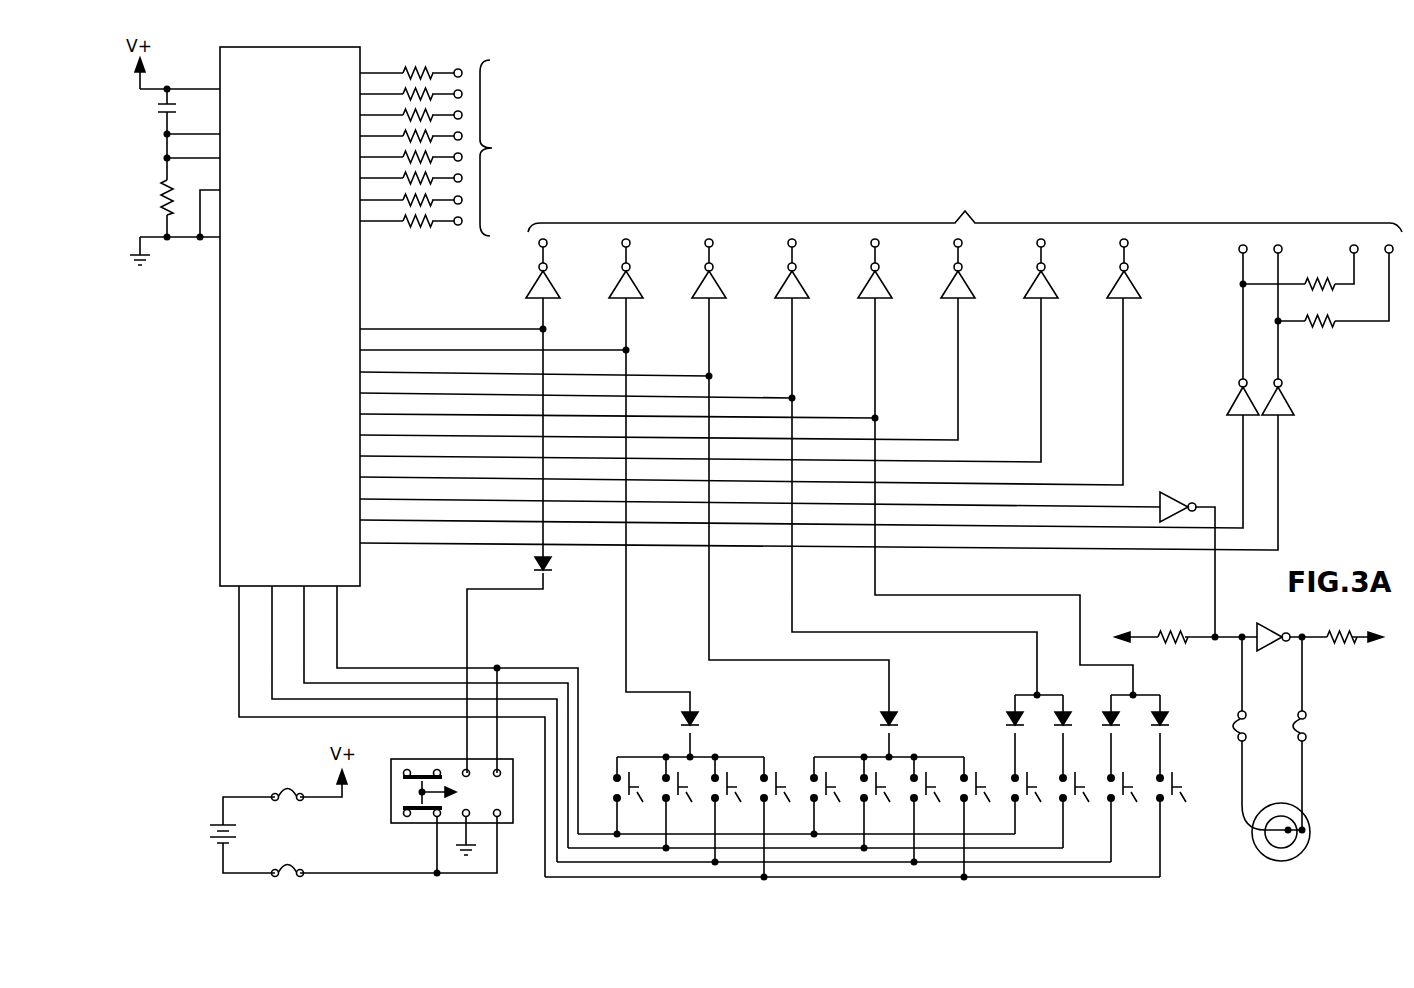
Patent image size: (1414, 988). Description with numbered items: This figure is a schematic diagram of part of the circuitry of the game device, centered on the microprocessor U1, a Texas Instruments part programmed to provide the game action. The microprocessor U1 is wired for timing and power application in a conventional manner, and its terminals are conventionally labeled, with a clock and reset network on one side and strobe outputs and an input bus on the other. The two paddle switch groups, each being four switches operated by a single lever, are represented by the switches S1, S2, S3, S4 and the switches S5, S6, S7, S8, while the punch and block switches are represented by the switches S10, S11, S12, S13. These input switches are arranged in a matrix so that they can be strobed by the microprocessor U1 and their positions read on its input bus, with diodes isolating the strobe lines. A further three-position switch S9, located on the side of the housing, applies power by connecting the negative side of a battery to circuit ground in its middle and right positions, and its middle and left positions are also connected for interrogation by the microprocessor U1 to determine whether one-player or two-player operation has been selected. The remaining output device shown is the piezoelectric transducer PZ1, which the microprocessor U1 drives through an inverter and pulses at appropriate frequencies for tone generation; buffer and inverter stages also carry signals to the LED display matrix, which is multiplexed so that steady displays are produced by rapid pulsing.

The microprocessor U1 is at (290, 317).
The switch S1 is at (629, 805).
The switch S2 is at (678, 812).
The switch S3 is at (727, 819).
The switch S4 is at (776, 826).
The switch S5 is at (826, 805).
The switch S6 is at (876, 812).
The switch S7 is at (926, 819).
The switch S8 is at (976, 826).
The three-position switch S9 is at (410, 824).
The switch S10 is at (1032, 803).
The switch S11 is at (1080, 810).
The switch S12 is at (1128, 817).
The switch S13 is at (1177, 824).
The piezoelectric transducer PZ1 is at (1271, 760).